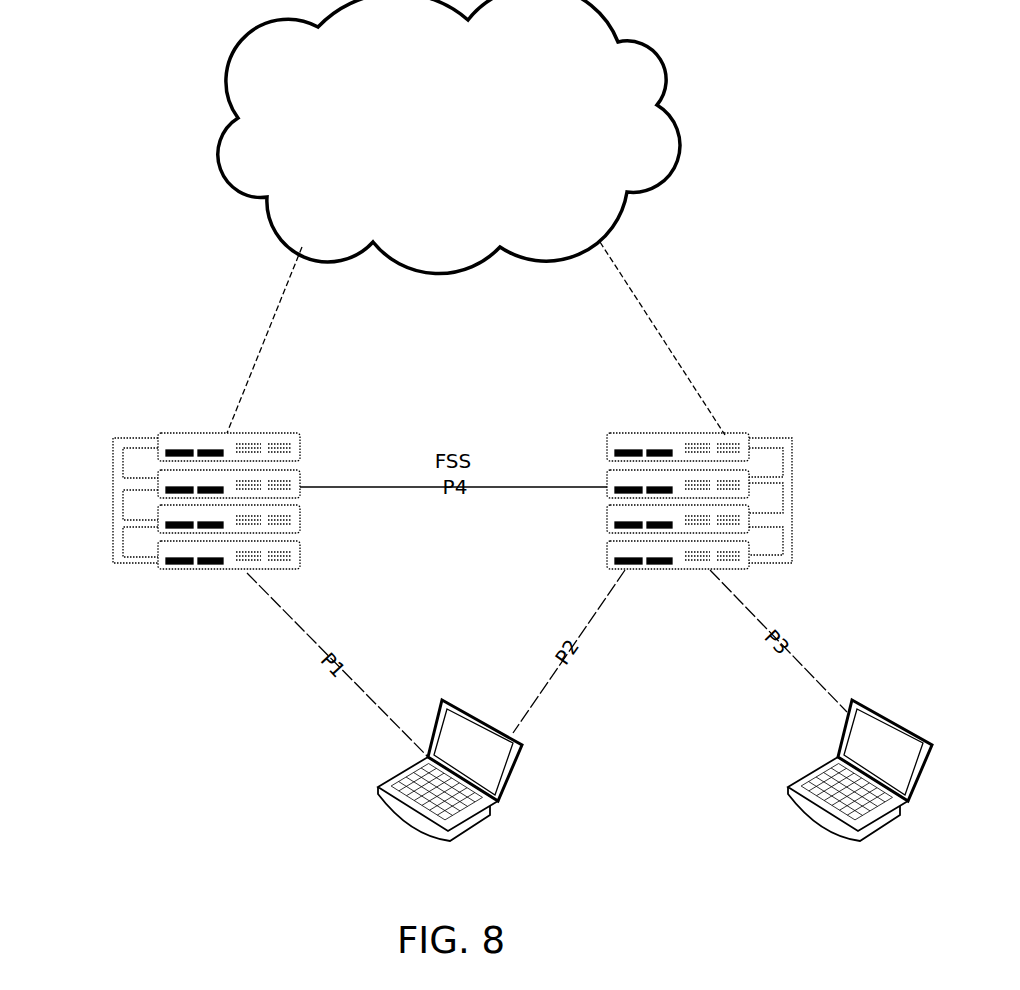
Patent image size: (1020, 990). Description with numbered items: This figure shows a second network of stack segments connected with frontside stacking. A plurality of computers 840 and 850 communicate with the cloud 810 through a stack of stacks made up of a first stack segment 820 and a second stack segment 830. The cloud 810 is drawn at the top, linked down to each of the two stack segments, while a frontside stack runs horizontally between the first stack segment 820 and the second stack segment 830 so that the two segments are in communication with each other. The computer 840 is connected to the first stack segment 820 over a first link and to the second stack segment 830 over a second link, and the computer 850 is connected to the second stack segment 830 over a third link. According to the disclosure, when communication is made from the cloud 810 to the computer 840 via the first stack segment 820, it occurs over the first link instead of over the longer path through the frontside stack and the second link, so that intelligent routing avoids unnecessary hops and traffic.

The cloud 810 is at (680, 148).
The stack segment 1 820 is at (262, 433).
The stack segment 2 830 is at (728, 433).
The computer 840 is at (493, 827).
The computer 850 is at (788, 790).